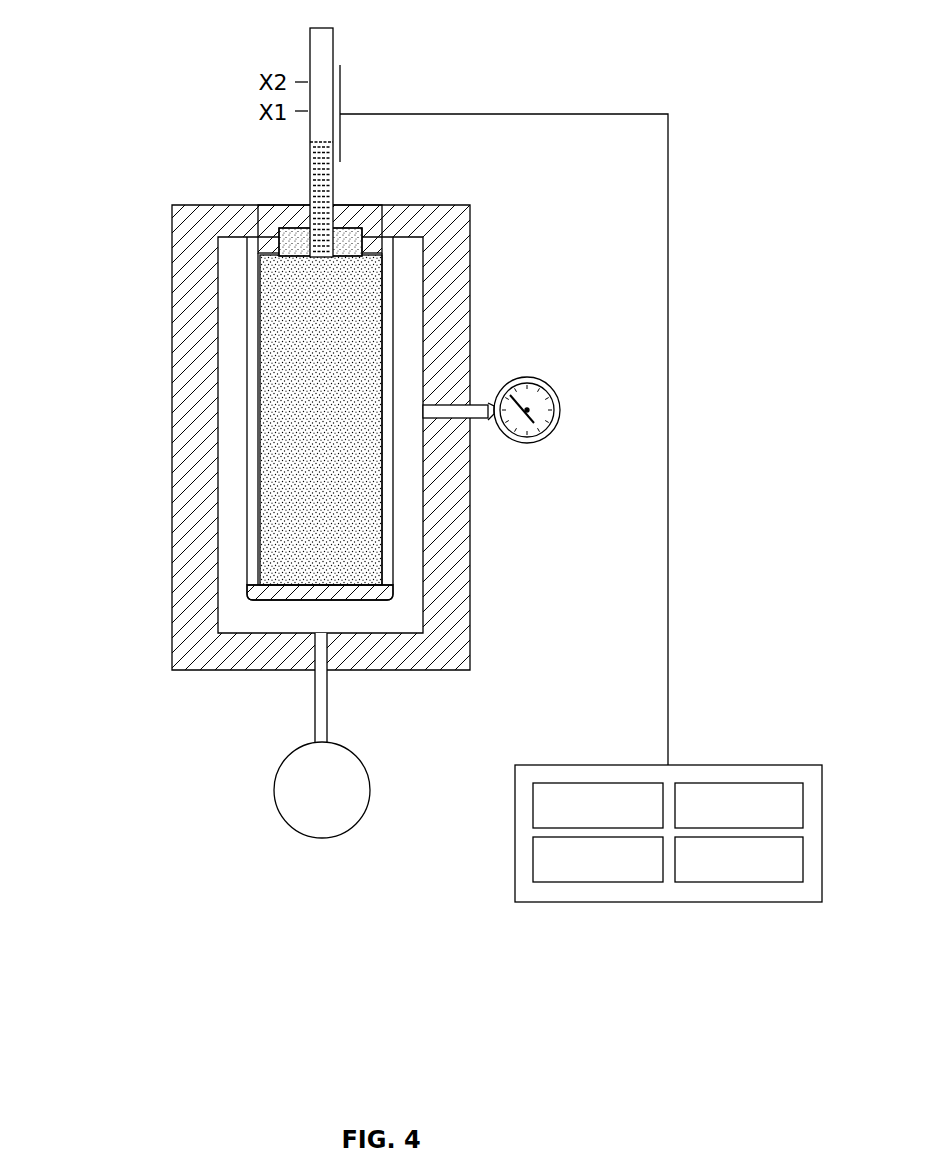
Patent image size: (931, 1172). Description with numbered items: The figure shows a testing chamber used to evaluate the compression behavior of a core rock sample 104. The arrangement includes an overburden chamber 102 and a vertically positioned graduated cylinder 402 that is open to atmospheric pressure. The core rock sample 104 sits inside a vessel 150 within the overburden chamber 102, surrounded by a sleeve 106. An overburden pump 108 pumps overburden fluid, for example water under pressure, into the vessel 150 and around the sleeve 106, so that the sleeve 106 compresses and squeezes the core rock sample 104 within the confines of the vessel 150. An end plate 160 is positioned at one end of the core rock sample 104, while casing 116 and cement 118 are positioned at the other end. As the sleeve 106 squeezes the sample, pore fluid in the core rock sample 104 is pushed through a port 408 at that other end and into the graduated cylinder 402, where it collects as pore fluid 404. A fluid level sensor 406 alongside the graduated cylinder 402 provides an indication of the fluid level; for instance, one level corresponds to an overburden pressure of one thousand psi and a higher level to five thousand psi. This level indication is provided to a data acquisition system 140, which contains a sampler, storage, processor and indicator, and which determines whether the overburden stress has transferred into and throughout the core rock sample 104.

The overburden chamber 102 is at (172, 472).
The core rock sample 104 is at (297, 432).
The sleeve 106 is at (243, 562).
The overburden pump 108 is at (275, 788).
The casing 116 is at (292, 230).
The cement 118 is at (350, 229).
The data acquisition system 140 is at (580, 765).
The vessel 150 is at (228, 358).
The end plate 160 is at (362, 600).
The graduated cylinder 402 is at (364, 137).
The pore fluid 404 is at (334, 156).
The fluid level sensor 406 is at (342, 94).
The port 408 is at (323, 257).